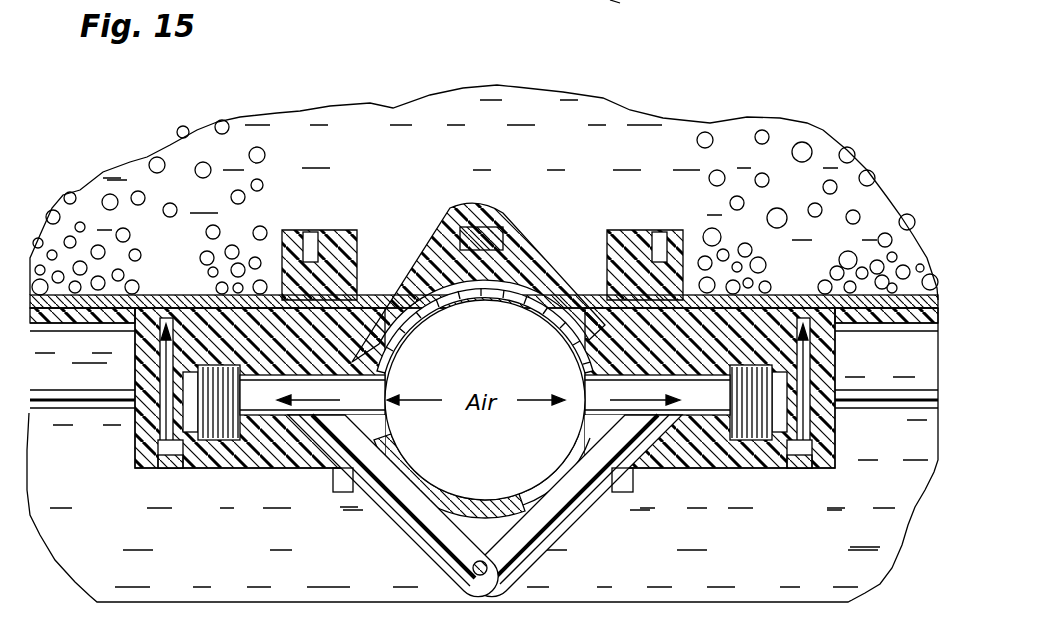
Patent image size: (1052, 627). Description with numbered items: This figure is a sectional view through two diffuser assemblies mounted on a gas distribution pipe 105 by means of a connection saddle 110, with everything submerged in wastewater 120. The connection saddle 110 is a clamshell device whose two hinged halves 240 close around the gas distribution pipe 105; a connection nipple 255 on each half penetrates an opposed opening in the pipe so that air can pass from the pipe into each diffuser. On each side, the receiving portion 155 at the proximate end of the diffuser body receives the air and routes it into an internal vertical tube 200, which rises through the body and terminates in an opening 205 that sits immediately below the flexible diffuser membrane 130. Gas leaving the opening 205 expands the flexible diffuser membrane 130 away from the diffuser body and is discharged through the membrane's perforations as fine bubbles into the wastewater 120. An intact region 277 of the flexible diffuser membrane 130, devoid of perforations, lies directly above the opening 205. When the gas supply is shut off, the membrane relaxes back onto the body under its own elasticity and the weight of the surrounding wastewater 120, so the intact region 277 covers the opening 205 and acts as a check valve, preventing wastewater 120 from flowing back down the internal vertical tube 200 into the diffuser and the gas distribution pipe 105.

The gas distribution pipe 105 is at (527, 308).
The connection saddle 110 is at (414, 216).
The wastewater 120 is at (815, 142).
The flexible diffuser membrane 130 is at (907, 293).
The receiving portion 155 is at (207, 472).
The internal vertical tube 200 is at (798, 422).
The opening 205 is at (832, 354).
The hinged halves 240 is at (397, 262).
The connection nipples 255 is at (306, 470).
The intact region 277 is at (188, 290).